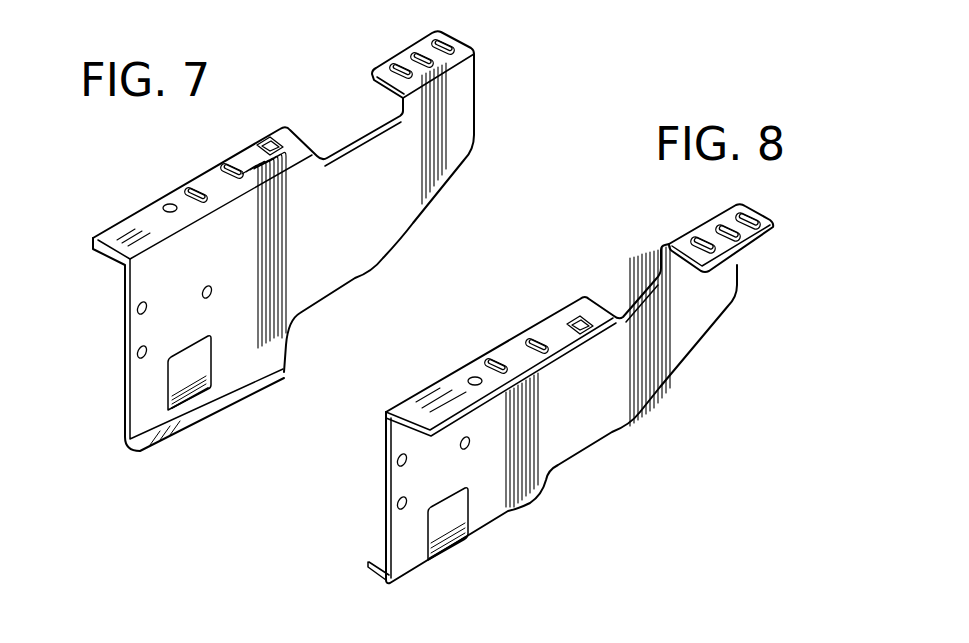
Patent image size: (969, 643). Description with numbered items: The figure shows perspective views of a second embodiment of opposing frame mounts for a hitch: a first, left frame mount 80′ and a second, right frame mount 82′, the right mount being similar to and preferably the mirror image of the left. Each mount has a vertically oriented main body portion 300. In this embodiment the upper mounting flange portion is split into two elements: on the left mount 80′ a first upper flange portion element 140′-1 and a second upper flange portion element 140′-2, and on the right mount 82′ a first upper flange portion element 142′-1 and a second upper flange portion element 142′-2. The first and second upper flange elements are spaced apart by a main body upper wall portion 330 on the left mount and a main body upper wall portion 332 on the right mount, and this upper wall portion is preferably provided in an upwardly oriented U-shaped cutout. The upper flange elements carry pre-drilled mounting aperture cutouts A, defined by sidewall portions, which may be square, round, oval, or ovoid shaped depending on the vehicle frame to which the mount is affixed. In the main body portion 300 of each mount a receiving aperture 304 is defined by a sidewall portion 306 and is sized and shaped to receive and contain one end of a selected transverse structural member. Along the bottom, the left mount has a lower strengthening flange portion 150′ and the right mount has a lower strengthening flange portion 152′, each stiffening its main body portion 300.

In FIG. 7, the first frame mount 80′ is at (312, 78).
In FIG. 8, the second frame mount 82′ is at (640, 240).
In FIG. 7, the first upper flange portion element 140′-1 is at (147, 203).
In FIG. 7, the second upper flange portion element 140′-2 is at (407, 42).
In FIG. 8, the first upper flange portion element 142′-1 is at (578, 348).
In FIG. 8, the second upper flange portion element 142′-2 is at (752, 248).
In FIG. 7, the pre-drilled mounting aperture cutouts A is at (207, 166).
In FIG. 8, the pre-drilled mounting aperture cutouts A is at (475, 377).
In FIG. 7, the main body upper wall portion 330 is at (363, 137).
In FIG. 8, the main body upper wall portion 332 is at (640, 280).
In FIG. 7, the main body portion 300 is at (338, 275).
In FIG. 8, the main body portion 300 is at (597, 440).
In FIG. 7, the receiving aperture 304 is at (168, 381).
In FIG. 8, the receiving aperture 304 is at (447, 487).
In FIG. 7, the sidewall portion 306 is at (184, 401).
In FIG. 8, the sidewall portion 306 is at (435, 549).
In FIG. 7, the lower strengthening flange portion 150′ is at (152, 450).
In FIG. 8, the lower strengthening flange portion 152′ is at (370, 568).